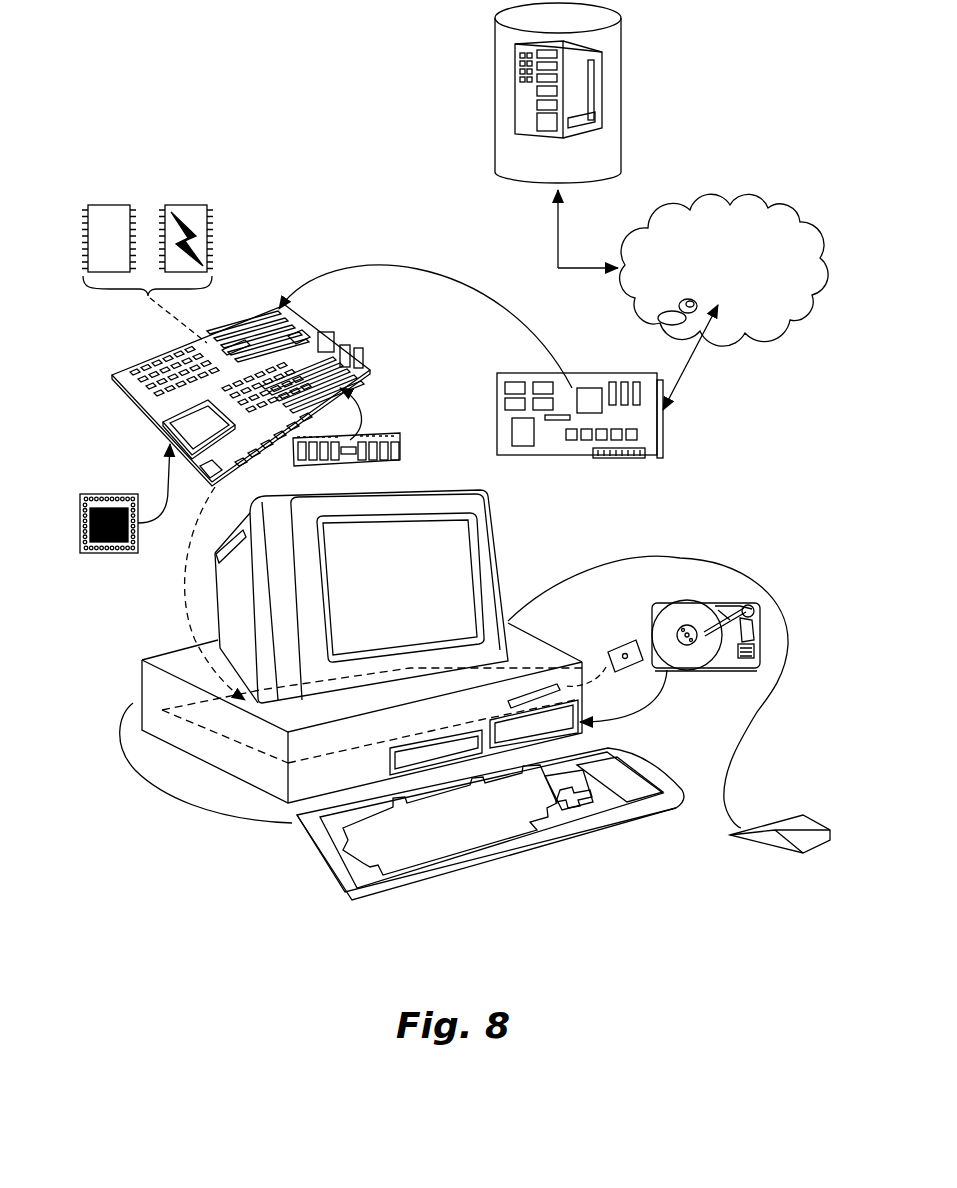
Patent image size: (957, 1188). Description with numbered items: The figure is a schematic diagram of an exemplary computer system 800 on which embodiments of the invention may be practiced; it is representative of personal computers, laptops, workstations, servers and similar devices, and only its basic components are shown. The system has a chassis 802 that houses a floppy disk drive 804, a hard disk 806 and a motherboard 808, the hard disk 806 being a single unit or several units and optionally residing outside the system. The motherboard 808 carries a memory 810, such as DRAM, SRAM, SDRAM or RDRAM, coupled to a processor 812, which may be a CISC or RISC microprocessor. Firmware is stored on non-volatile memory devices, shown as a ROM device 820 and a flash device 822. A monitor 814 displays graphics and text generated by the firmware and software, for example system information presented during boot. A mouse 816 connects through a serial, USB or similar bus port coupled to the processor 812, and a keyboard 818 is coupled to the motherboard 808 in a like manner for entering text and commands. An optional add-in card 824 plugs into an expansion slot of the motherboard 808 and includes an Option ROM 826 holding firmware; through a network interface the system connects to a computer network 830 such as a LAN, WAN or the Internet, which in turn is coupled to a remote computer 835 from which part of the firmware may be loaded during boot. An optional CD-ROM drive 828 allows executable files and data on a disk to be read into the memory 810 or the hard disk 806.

The computer system 800 is at (500, 876).
The chassis 802 is at (157, 683).
The floppy disk drive 804 is at (550, 689).
The hard disk 806 is at (720, 668).
The motherboard 808 is at (125, 357).
The memory 810 is at (400, 448).
The processor 812 is at (115, 553).
The monitor 814 is at (498, 548).
The mouse 816 is at (777, 840).
The keyboard 818 is at (577, 838).
The ROM device 820 is at (103, 212).
The flash device 822 is at (195, 212).
The add-in card 824 is at (652, 418).
The Option ROM 826 is at (512, 388).
The CD-ROM drive 828 is at (390, 765).
The computer network 830 is at (775, 316).
The remote computer 835 is at (622, 60).